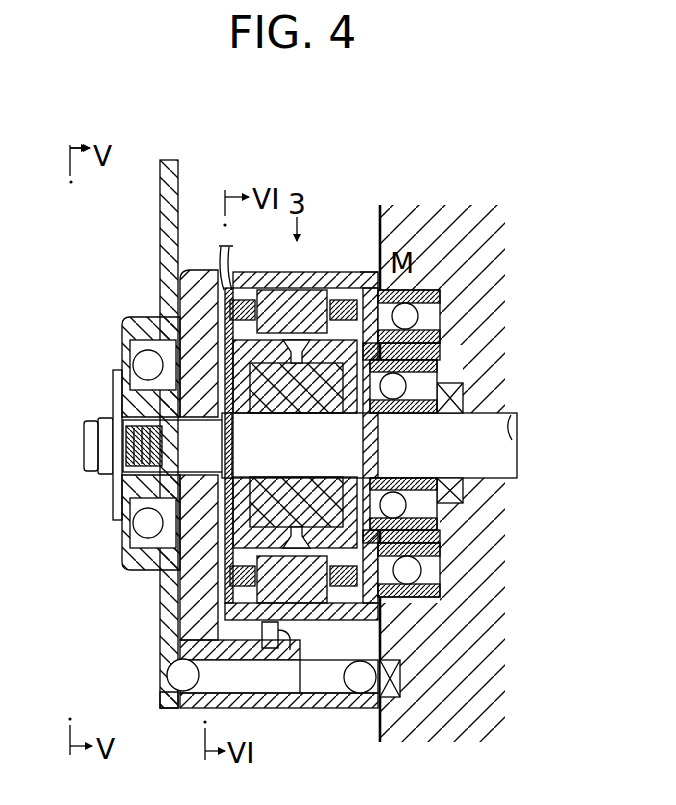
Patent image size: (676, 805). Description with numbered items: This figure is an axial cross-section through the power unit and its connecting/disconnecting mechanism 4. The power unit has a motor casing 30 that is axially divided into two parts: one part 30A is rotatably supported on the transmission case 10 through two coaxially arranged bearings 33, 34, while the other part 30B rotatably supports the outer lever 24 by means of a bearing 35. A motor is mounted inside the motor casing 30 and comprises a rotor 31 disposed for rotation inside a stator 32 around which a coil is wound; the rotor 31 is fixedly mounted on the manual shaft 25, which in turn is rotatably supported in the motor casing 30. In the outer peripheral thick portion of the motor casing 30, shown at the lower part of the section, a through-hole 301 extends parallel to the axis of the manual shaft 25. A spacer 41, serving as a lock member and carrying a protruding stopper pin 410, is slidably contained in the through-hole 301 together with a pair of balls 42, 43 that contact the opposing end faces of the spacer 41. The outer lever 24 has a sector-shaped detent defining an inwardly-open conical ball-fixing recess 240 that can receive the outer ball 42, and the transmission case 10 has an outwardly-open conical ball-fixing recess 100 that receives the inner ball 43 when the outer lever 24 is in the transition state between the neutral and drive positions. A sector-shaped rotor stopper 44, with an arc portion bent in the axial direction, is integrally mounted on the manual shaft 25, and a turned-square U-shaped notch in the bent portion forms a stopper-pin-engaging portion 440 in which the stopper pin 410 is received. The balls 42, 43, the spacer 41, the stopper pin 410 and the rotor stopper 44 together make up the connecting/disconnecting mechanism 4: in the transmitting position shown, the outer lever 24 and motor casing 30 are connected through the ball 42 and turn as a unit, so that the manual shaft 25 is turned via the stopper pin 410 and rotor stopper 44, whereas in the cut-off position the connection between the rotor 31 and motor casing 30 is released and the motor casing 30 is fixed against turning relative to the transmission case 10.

The transmission case 10 is at (379, 221).
The outer lever 24 is at (165, 202).
The manual shaft 25 is at (503, 462).
The motor casing 30 is at (328, 284).
The motor casing part 30A is at (313, 269).
The motor casing part 30B is at (202, 267).
The rotor 31 is at (307, 405).
The stator 32 is at (270, 288).
The bearing 33 is at (400, 386).
The bearing 34 is at (410, 316).
The bearing 35 is at (138, 365).
The spacer 41 is at (318, 690).
The outer ball 42 is at (177, 687).
The inner ball 43 is at (398, 688).
The rotor stopper 44 is at (178, 590).
The ball-fixing recess 100 is at (400, 668).
The ball-fixing recess 240 is at (168, 672).
The through-hole 301 is at (298, 686).
The stopper pin 410 is at (385, 665).
The stopper-pin-engaging portion 440 is at (380, 610).
The connecting/disconnecting mechanism 4 is at (268, 703).